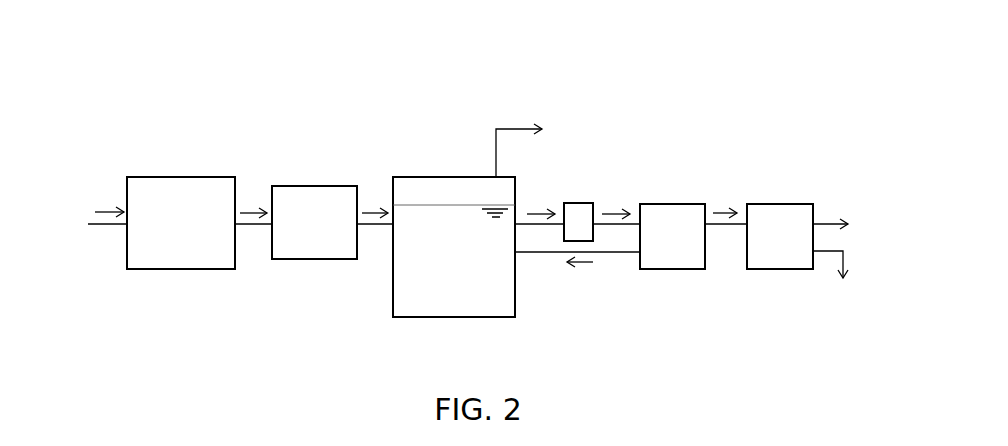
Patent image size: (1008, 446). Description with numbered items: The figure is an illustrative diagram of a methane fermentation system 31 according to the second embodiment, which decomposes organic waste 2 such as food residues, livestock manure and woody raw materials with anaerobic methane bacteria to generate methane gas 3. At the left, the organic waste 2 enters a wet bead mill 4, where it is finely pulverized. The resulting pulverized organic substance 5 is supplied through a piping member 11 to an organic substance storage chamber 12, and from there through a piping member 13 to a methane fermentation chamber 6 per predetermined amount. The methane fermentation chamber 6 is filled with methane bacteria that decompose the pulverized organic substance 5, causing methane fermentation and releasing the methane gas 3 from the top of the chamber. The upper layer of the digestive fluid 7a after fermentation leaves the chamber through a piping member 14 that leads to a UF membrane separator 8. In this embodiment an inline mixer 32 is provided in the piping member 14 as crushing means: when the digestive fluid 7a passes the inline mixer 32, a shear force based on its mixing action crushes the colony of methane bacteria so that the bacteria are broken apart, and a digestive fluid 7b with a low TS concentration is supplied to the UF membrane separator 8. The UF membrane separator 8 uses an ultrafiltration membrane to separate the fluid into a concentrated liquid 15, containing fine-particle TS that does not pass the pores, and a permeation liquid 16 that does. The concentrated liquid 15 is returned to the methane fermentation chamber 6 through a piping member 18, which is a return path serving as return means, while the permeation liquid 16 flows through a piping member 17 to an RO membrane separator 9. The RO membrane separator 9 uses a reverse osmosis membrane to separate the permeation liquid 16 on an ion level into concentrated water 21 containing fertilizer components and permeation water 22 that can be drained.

The organic waste 2 is at (103, 208).
The methane gas 3 is at (516, 127).
The wet bead mill 4 is at (160, 177).
The pulverized organic substance 5 is at (249, 208).
The methane fermentation chamber 6 is at (435, 317).
The digestive fluid 7a is at (435, 217).
The digestive fluid 7b is at (617, 210).
The UF membrane separator 8 is at (672, 270).
The RO membrane separator 9 is at (778, 270).
The piping member 11 is at (252, 228).
The organic substance storage chamber 12 is at (309, 186).
The piping member 13 is at (373, 228).
The piping member 14 is at (523, 222).
The concentrated liquid 15 is at (584, 266).
The permeation liquid 16 is at (722, 207).
The piping member 17 is at (725, 226).
The piping member 18 is at (616, 254).
The concentrated water 21 is at (828, 220).
The permeation water 22 is at (823, 254).
The methane fermentation system 31 is at (662, 74).
The inline mixer 32 is at (580, 203).